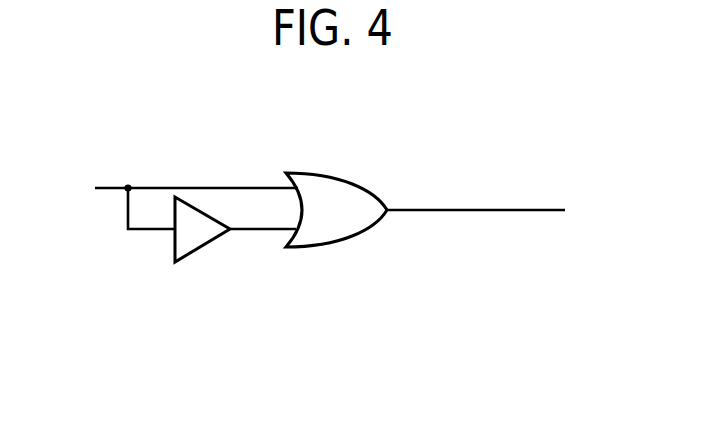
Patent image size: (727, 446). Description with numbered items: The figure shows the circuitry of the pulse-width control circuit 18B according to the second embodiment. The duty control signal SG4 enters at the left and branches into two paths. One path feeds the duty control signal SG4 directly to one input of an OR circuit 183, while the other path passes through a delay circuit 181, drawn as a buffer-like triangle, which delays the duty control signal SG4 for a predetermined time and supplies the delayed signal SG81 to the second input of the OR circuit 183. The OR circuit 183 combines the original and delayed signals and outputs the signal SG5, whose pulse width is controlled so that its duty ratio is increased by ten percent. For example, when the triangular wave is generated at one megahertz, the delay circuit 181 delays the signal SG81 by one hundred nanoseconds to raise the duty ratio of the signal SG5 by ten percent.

The pulse-width control circuit 18B is at (377, 134).
The delay circuit 181 is at (175, 250).
The OR circuit 183 is at (345, 245).
The duty control signal SG4 is at (171, 203).
The signal SG81 is at (263, 243).
The signal SG5 is at (501, 212).